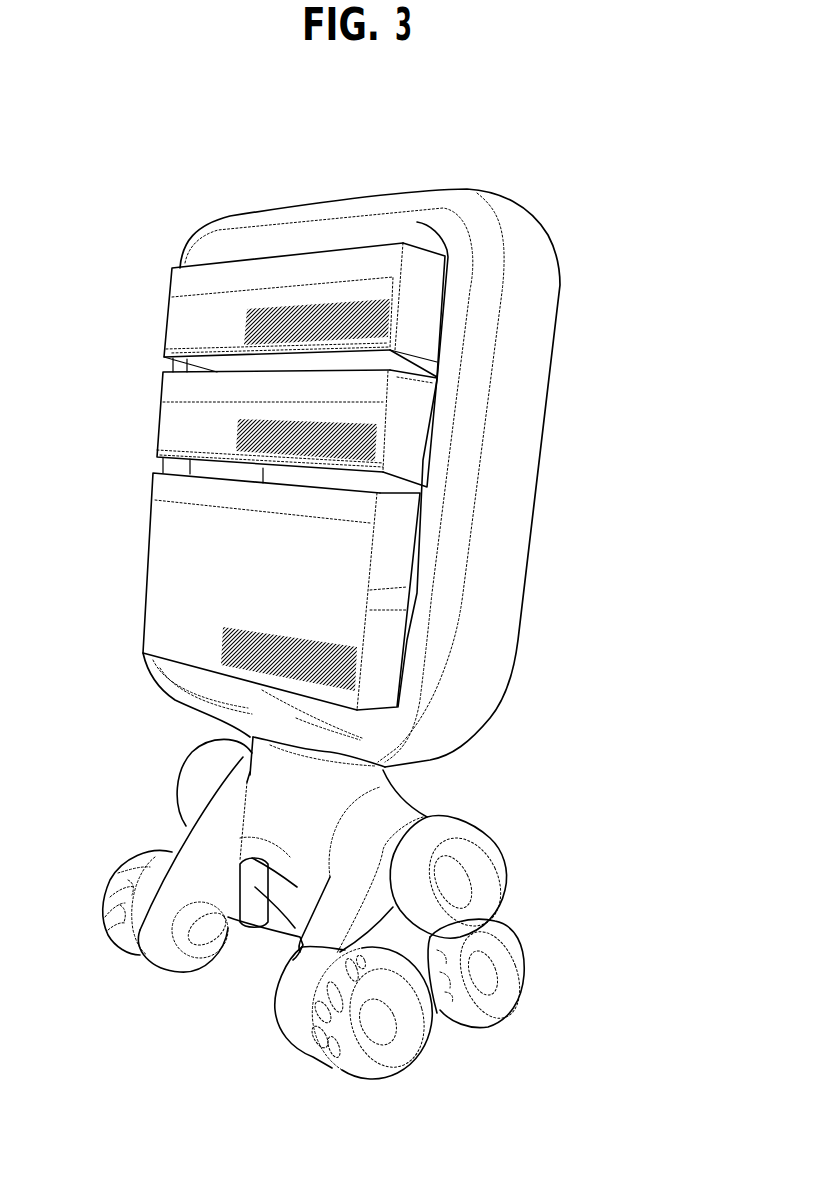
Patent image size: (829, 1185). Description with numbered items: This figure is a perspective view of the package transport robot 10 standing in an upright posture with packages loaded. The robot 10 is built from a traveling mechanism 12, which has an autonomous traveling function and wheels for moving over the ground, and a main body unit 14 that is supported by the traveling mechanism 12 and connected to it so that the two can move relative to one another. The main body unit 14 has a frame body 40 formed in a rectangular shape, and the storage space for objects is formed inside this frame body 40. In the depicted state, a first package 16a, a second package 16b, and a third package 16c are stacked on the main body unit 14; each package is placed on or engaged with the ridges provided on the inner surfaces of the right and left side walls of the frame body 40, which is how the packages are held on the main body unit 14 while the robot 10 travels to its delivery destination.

The package transport robot 10 is at (399, 1155).
The traveling mechanism 12 is at (477, 827).
The main body unit 14 is at (537, 602).
The first package 16a is at (156, 317).
The second package 16b is at (155, 425).
The third package 16c is at (148, 560).
The frame body 40 is at (550, 428).